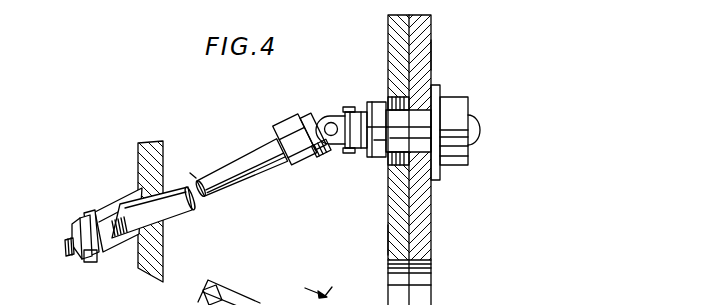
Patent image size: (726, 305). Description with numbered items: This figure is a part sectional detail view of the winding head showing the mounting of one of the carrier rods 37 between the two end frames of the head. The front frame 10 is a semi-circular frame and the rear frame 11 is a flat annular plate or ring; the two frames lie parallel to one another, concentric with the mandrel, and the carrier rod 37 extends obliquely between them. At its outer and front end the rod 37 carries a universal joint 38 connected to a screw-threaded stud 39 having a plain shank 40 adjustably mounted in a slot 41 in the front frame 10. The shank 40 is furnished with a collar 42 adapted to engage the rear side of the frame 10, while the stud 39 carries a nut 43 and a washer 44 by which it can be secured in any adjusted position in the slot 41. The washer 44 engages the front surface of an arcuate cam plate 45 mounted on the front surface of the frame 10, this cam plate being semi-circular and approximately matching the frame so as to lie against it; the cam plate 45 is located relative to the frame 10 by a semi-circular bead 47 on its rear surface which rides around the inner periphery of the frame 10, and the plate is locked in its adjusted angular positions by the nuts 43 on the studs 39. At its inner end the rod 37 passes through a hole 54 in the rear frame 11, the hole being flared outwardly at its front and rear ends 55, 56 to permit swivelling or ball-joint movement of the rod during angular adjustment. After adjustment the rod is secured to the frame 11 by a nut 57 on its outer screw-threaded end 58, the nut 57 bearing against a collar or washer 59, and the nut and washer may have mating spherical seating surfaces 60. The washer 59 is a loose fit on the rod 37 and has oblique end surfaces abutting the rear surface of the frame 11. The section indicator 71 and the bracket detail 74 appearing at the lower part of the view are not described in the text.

The front frame 10 is at (412, 27).
The rear frame 11 is at (147, 157).
The carrier rod 37 is at (260, 158).
The universal joint 38 is at (327, 122).
The screw-threaded stud 39 is at (479, 133).
The plain shank 40 is at (398, 120).
The slot 41 is at (388, 98).
The collar 42 is at (382, 143).
The nut 43 is at (452, 105).
The washer 44 is at (437, 84).
The arcuate cam plate 45 is at (425, 53).
The semi-circular bead 47 is at (392, 237).
The hole 54 is at (138, 203).
The flared front end 55 is at (182, 177).
The flared rear end 56 is at (132, 208).
The nut 57 is at (97, 257).
The screw-threaded end 58 is at (72, 250).
The collar or washer 59 is at (128, 243).
The spherical seating surfaces 60 is at (82, 222).
The bracket 71 is at (309, 289).
The arm 74 is at (262, 304).